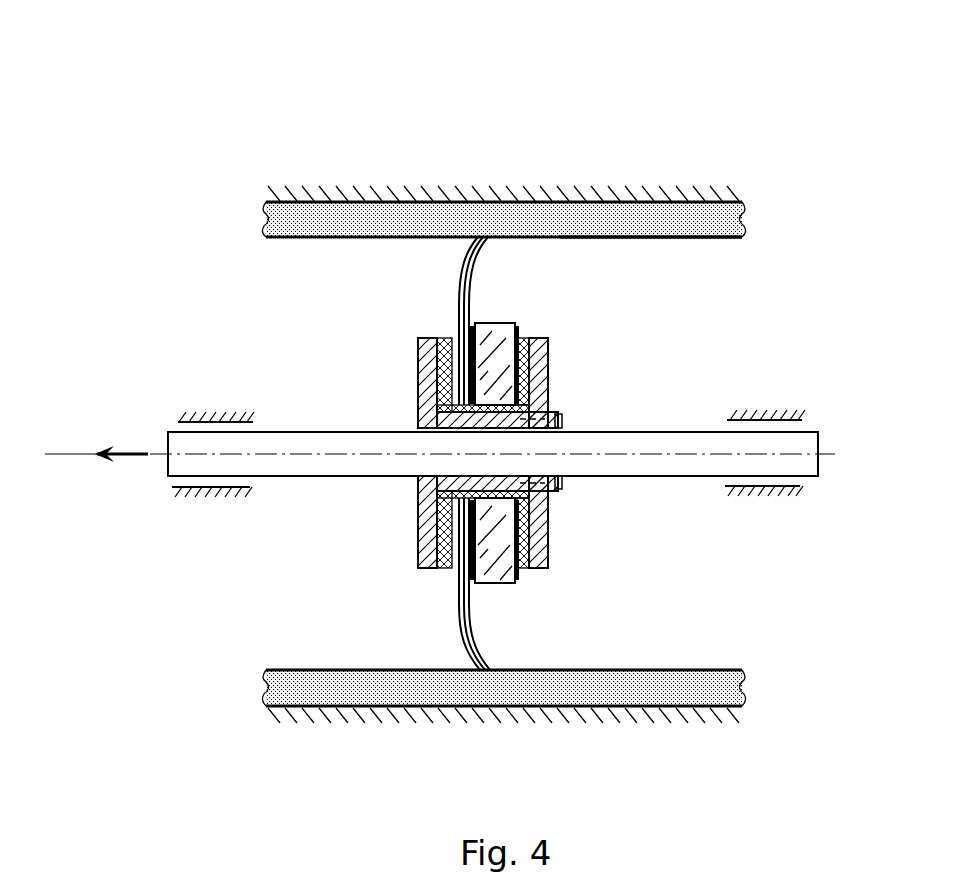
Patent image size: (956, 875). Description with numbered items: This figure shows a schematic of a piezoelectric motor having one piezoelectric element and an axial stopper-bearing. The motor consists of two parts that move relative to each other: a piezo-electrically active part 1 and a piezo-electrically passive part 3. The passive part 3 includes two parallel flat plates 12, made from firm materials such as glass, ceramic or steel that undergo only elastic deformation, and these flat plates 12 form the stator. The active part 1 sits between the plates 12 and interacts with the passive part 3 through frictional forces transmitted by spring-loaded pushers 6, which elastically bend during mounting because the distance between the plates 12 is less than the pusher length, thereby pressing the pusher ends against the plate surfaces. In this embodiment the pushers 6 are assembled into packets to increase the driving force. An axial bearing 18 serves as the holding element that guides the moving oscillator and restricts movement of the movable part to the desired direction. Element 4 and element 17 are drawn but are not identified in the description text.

The piezo-electrically active part 1 is at (554, 563).
The piezo-electrically passive part 3 is at (655, 242).
The core 4 is at (515, 325).
The spring-loaded pushers 6 is at (458, 614).
The flat plates 12 is at (672, 217).
The shaft 17 is at (572, 444).
The axial bearing 18 is at (208, 416).